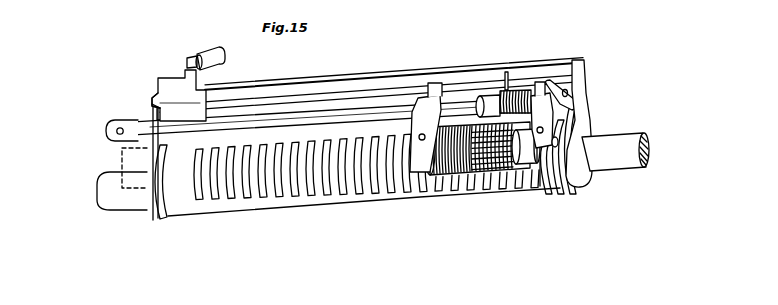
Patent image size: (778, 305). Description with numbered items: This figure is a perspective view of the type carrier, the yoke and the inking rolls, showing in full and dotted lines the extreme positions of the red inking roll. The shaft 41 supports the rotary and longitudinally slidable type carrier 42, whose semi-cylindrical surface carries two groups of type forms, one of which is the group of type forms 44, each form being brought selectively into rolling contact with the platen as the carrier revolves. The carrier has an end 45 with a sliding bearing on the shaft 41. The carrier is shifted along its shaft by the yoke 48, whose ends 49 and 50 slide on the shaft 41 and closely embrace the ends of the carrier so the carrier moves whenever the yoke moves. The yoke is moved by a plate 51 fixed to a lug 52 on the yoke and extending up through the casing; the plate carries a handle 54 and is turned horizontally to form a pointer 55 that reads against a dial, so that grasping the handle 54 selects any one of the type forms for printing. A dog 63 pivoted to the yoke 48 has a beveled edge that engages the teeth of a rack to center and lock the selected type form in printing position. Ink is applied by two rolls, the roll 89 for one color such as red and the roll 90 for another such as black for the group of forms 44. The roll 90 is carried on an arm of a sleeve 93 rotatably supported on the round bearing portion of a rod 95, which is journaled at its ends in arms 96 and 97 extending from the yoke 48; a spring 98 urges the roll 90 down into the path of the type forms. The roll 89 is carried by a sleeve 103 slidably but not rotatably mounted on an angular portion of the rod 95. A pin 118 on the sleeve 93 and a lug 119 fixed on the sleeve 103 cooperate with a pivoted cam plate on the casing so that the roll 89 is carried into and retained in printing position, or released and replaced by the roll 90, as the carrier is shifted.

The shaft 41 is at (624, 137).
The type carrier 42 is at (558, 194).
The group of type forms 44 is at (541, 195).
The end of type carrier 45 is at (370, 197).
The yoke 48 is at (350, 81).
The end of yoke 49 is at (588, 127).
The end of yoke 50 is at (152, 212).
The plate 51 is at (168, 77).
The lug 52 is at (151, 96).
The handle 54 is at (213, 48).
The pointer 55 is at (193, 57).
The dog 63 is at (148, 103).
The inking roll 89 is at (457, 177).
The inking roll 90 is at (500, 180).
The sleeve 93 is at (552, 83).
The rod 95 is at (273, 110).
The arm 96 is at (570, 93).
The arm 97 is at (147, 112).
The spring 98 is at (488, 94).
The sleeve 103 is at (462, 99).
The pin 118 is at (536, 86).
The lug 119 is at (435, 83).